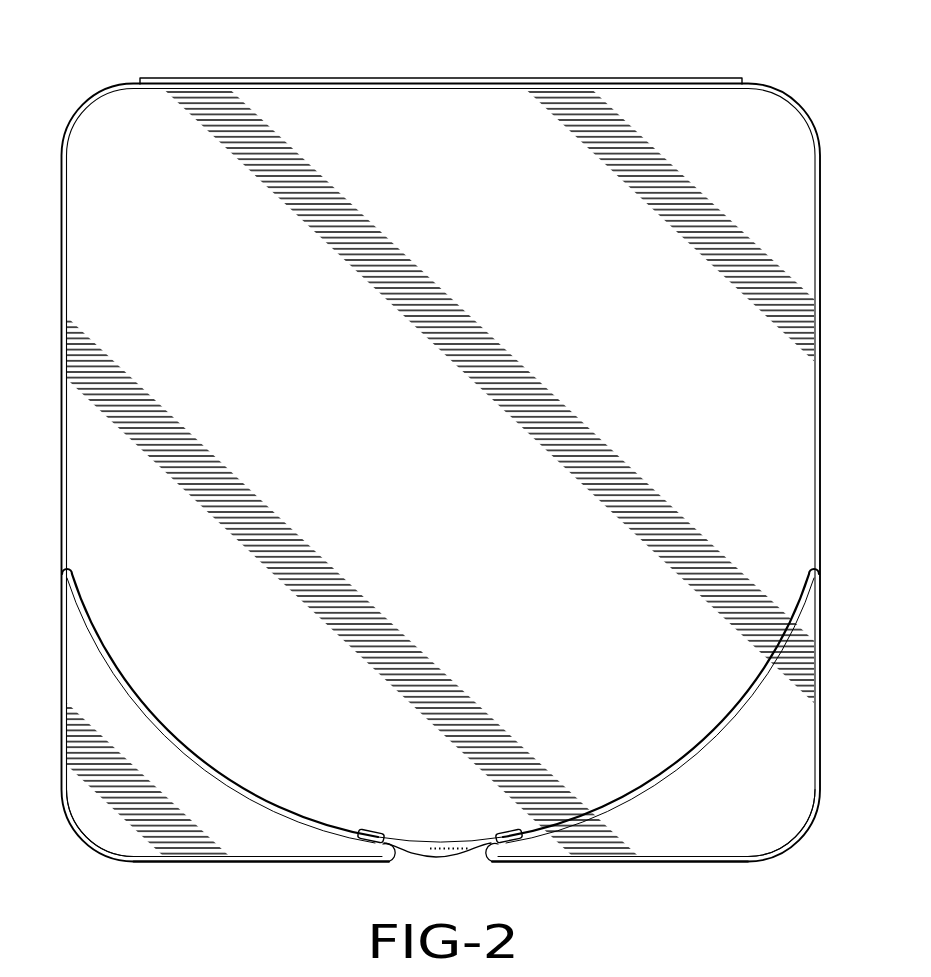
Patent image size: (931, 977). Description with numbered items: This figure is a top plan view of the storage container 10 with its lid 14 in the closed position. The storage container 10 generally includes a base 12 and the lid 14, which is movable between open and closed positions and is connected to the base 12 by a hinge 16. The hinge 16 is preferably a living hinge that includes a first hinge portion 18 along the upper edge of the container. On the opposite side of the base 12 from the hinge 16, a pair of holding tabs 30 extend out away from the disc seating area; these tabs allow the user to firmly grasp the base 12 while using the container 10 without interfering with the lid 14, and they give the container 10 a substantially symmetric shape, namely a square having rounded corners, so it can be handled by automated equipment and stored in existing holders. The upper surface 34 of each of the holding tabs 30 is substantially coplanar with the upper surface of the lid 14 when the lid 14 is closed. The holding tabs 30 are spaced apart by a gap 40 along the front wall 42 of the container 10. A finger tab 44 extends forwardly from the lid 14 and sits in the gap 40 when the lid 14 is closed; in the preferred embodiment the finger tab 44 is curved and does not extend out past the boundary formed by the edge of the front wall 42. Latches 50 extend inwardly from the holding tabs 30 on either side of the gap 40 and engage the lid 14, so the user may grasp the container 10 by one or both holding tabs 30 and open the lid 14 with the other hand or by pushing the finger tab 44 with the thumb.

The storage container 10 is at (688, 55).
The base 12 is at (100, 862).
The lid 14 is at (458, 130).
The hinge 16 is at (518, 70).
The first hinge portion 18 is at (375, 79).
The holding tabs 30 is at (224, 838).
The upper surface 34 is at (140, 845).
The gap 40 is at (471, 852).
The front wall 42 is at (269, 870).
The finger tab 44 is at (432, 856).
The latches 50 is at (380, 832).